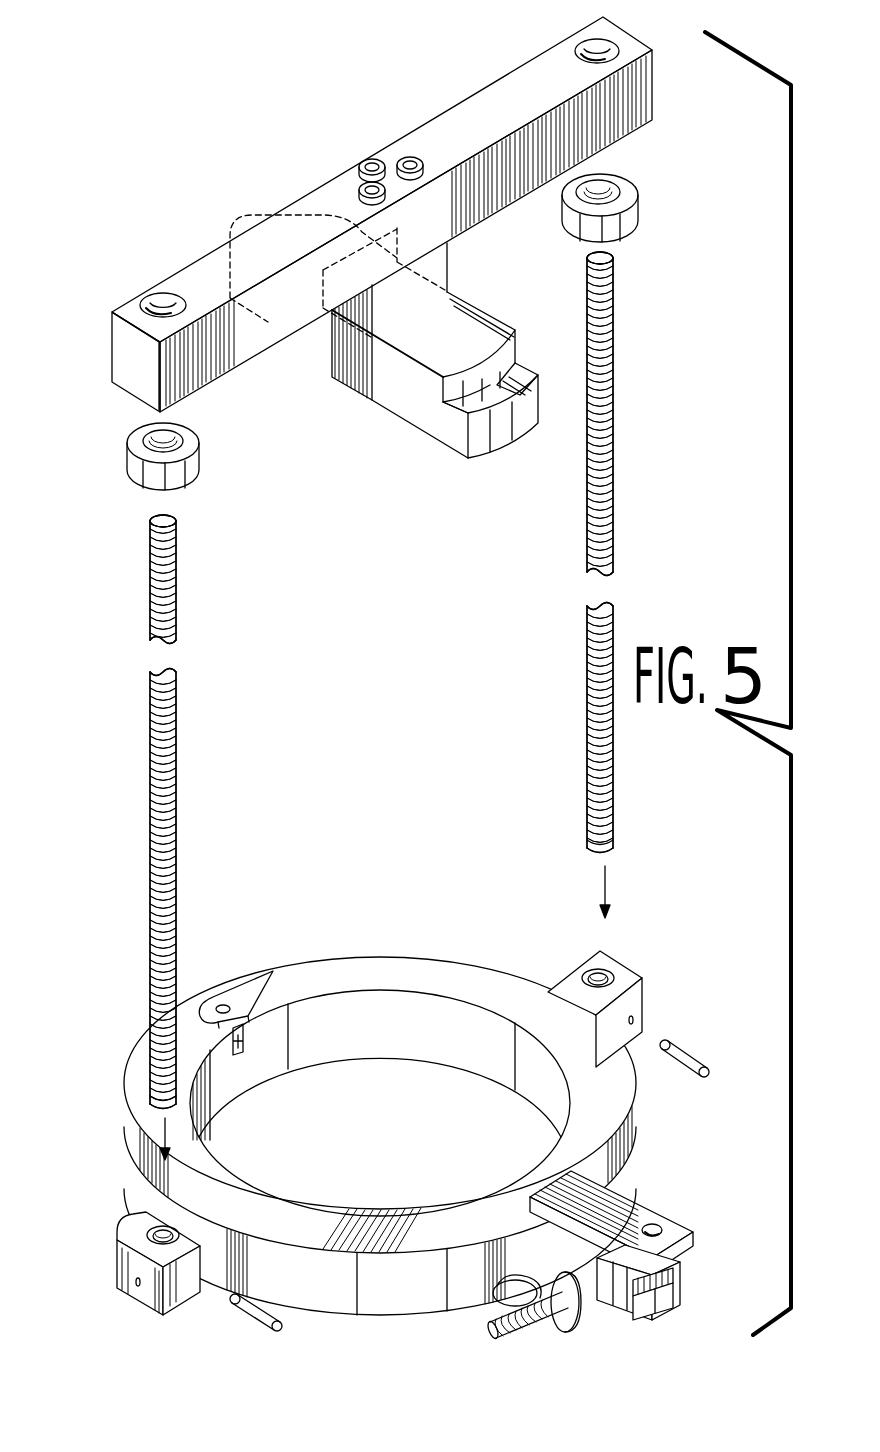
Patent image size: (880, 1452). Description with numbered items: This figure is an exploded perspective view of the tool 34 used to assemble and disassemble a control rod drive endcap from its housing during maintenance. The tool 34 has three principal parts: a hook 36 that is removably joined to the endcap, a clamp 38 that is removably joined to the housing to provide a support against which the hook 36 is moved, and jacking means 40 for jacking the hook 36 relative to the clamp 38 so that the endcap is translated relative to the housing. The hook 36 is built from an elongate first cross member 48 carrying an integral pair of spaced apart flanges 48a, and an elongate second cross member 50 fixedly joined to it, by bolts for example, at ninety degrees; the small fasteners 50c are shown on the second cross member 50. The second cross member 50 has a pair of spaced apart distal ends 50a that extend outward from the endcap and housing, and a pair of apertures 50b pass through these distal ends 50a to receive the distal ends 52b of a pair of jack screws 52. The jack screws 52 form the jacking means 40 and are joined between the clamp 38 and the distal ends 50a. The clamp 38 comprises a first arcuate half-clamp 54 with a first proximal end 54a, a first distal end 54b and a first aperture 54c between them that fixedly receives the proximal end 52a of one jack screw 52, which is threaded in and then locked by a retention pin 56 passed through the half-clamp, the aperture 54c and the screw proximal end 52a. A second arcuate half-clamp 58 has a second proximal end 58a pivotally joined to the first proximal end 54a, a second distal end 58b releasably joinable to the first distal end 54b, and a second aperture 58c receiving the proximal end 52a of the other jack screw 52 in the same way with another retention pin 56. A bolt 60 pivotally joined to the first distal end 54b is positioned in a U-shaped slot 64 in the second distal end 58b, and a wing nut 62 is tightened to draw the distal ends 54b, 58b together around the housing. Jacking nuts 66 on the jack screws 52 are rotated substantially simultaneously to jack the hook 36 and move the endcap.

The tool 34 is at (147, 758).
The hook 36 is at (273, 204).
The clamp 38 is at (435, 948).
The jacking means 40 is at (632, 434).
The first cross member 48 is at (352, 350).
The flanges 48a is at (232, 217).
The second cross member 50 is at (292, 200).
The distal ends 50a is at (122, 343).
The apertures 50b is at (163, 292).
The fastener nuts 50c is at (450, 113).
The jack screws 52 is at (171, 748).
The proximal end 52a is at (150, 1078).
The distal ends 52b is at (176, 535).
The first arcuate half-clamp 54 is at (423, 1095).
The first proximal end 54a is at (237, 1001).
The first distal end 54b is at (680, 1221).
The first aperture 54c is at (583, 961).
The retention pin 56 is at (682, 1062).
The second arcuate half-clamp 58 is at (383, 1145).
The second proximal end 58a is at (196, 1028).
The second distal end 58b is at (623, 1330).
The second aperture 58c is at (128, 1228).
The bolt 60 is at (515, 1336).
The wing nut 62 is at (485, 1290).
The U-shaped slot 64 is at (690, 1268).
The jacking nuts 66 is at (200, 462).